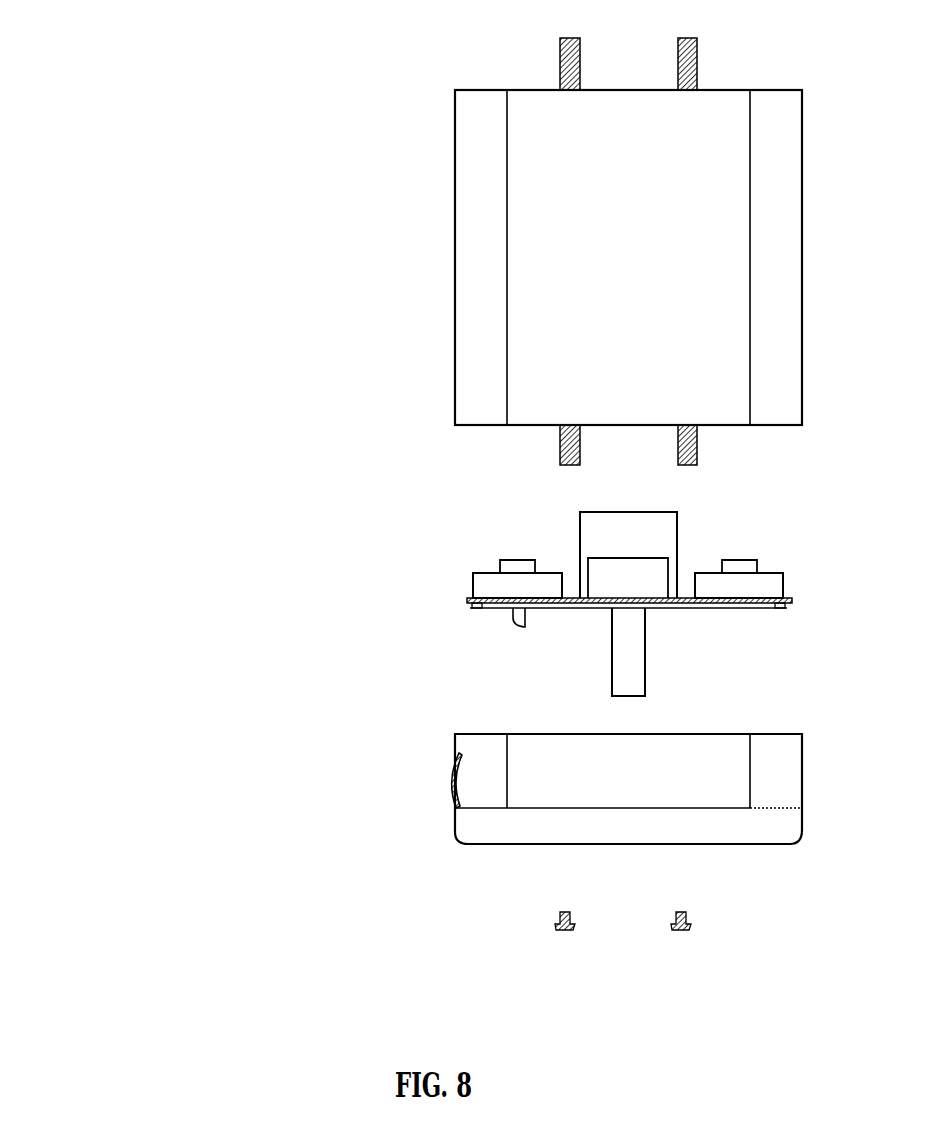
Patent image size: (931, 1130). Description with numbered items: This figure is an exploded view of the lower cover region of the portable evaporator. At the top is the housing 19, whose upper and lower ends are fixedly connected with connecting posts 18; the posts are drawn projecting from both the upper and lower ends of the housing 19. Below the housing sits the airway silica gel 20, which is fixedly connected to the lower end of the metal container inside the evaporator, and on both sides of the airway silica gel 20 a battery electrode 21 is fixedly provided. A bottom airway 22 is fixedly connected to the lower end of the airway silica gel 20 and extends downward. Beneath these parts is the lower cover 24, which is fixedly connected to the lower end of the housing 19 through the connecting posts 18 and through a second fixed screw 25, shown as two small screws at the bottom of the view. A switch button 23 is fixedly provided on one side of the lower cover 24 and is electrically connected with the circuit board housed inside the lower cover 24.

The connecting posts 18 is at (550, 52).
The housing 19 is at (440, 265).
The airway silica gel 20 is at (568, 521).
The battery electrode 21 is at (470, 583).
The bottom airway 22 is at (603, 661).
The switch button 23 is at (450, 768).
The lower cover 24 is at (448, 829).
The second fixed screw 25 is at (513, 920).